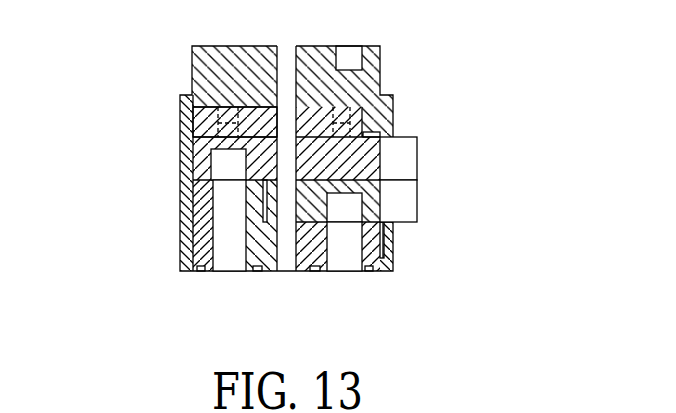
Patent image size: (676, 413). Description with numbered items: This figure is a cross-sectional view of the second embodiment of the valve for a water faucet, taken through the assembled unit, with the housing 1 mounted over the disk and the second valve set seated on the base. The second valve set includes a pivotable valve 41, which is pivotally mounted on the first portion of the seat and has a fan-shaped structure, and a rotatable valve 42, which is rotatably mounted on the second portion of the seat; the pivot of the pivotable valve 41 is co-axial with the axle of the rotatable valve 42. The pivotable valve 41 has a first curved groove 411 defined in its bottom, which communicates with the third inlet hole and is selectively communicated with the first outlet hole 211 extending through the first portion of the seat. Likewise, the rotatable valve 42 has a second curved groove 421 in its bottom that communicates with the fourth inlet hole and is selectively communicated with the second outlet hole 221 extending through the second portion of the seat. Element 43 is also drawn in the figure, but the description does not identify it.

The housing 1 is at (380, 70).
The rotatable valve 42 is at (194, 140).
The second curved groove 421 is at (227, 167).
The upper side block 43 is at (417, 157).
The pivotable valve 41 is at (380, 203).
The first curved groove 411 is at (350, 212).
The second outlet hole 221 is at (233, 253).
The first outlet hole 211 is at (348, 255).